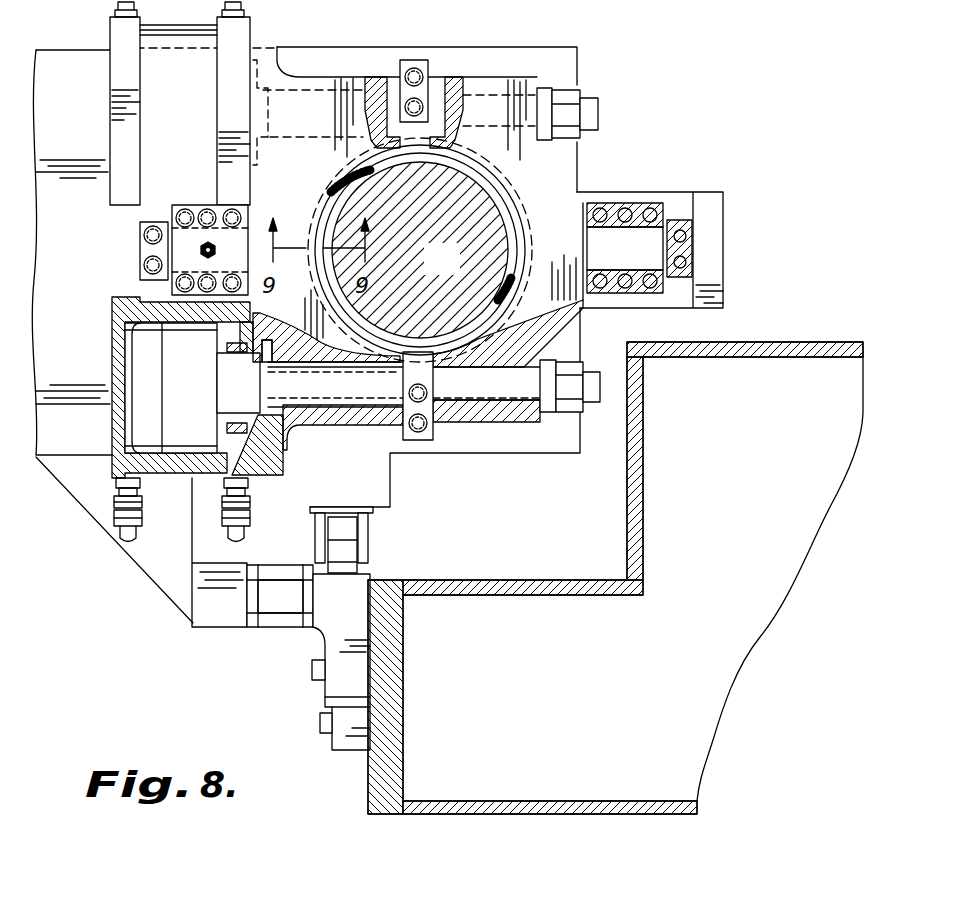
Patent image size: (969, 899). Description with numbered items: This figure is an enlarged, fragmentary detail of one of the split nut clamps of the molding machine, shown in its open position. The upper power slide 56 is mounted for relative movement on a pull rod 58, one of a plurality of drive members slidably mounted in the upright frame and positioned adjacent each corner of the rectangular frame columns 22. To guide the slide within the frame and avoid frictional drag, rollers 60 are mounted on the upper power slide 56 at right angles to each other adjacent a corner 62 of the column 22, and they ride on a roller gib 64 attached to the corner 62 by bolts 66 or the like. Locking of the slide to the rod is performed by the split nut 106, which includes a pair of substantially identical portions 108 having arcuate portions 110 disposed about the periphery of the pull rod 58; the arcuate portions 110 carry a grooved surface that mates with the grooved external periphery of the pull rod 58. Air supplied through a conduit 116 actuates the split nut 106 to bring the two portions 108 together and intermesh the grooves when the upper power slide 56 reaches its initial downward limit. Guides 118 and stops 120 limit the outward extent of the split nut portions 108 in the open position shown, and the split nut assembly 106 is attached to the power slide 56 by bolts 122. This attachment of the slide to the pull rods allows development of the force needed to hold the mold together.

The frame column 22 is at (483, 812).
The upper power slide 56 is at (84, 345).
The pull rod 58 is at (456, 272).
The roller 60 is at (347, 537).
The corner 62 is at (281, 641).
The roller gib 64 is at (368, 580).
The bolt 66 is at (320, 723).
The split nut 106 is at (537, 76).
The split nut portion 108 is at (329, 82).
The arcuate portion 110 is at (333, 198).
The conduit 116 is at (233, 526).
The guide 118 is at (178, 248).
The stop 120 is at (141, 241).
The bolt 122 is at (233, 206).